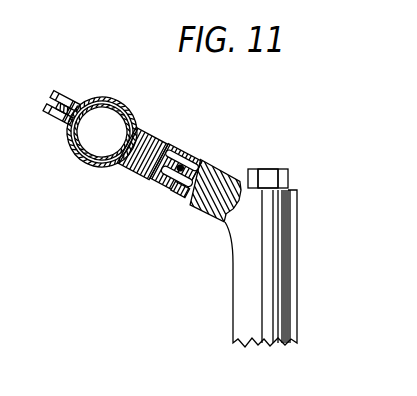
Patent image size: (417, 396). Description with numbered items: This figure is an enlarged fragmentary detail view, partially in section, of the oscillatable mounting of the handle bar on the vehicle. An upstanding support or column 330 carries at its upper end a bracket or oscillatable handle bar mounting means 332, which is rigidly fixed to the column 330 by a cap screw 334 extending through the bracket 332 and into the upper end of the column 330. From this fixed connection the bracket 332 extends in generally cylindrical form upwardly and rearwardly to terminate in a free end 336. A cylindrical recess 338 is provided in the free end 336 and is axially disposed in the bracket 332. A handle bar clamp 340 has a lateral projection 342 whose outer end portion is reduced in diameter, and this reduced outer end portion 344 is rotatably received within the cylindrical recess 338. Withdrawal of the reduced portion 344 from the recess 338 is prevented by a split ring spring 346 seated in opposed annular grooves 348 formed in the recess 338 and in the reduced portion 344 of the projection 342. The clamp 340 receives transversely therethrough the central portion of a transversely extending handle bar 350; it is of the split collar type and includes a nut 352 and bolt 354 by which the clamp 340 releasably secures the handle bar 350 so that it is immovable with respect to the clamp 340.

The upstanding support or column 330 is at (245, 287).
The bracket or oscillatable handle bar mounting means 332 is at (243, 182).
The cap screw 334 is at (268, 177).
The free end 336 is at (165, 145).
The cylindrical recess 338 is at (215, 182).
The handle bar clamp 340 is at (88, 163).
The lateral projection 342 is at (138, 173).
The reduced outer end portion 344 is at (196, 206).
The split ring spring 346 is at (200, 163).
The annular grooves 348 is at (182, 193).
The handle bar 350 is at (113, 98).
The nut 352 is at (50, 119).
The bolt 354 is at (70, 96).